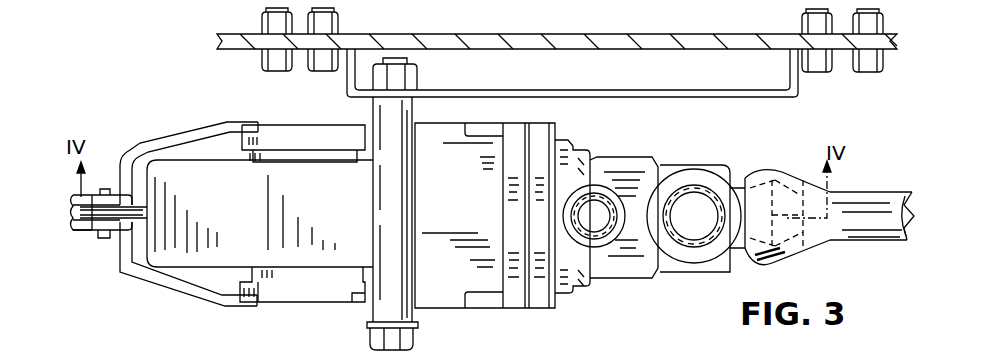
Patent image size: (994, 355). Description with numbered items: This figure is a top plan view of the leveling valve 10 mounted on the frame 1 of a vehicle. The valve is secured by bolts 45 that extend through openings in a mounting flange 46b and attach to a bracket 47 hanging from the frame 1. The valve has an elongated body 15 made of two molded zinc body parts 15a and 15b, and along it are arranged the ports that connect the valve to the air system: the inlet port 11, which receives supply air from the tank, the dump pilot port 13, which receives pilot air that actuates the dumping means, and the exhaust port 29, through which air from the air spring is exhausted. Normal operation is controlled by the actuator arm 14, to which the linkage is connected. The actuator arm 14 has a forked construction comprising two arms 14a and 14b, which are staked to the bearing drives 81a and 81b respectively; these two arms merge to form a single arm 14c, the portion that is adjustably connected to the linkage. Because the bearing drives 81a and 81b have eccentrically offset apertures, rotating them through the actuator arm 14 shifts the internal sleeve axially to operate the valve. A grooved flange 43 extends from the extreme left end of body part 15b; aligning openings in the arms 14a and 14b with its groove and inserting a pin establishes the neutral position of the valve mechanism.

The frame 1 is at (742, 46).
The leveling valve 10 is at (486, 110).
The inlet port 11 is at (697, 178).
The dump pilot port 13 is at (598, 183).
The actuator arm 14 is at (165, 203).
The arm 14a is at (200, 297).
The arm 14b is at (160, 133).
The single arm 14c is at (90, 192).
The elongated body 15 is at (551, 122).
The body part 15a is at (543, 304).
The body part 15b is at (457, 297).
The exhaust port 29 is at (802, 182).
The flange 43 is at (141, 286).
The bolts 45 is at (408, 81).
The flange 46b is at (405, 178).
The bracket 47 is at (348, 80).
The bearing drive 81a is at (302, 295).
The bearing drive 81b is at (292, 138).